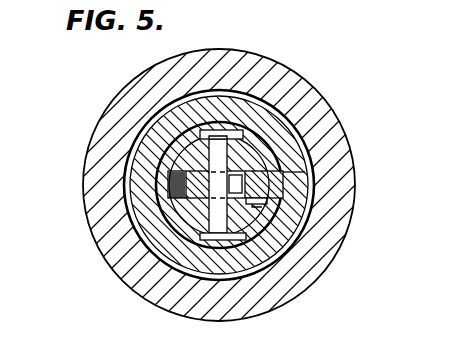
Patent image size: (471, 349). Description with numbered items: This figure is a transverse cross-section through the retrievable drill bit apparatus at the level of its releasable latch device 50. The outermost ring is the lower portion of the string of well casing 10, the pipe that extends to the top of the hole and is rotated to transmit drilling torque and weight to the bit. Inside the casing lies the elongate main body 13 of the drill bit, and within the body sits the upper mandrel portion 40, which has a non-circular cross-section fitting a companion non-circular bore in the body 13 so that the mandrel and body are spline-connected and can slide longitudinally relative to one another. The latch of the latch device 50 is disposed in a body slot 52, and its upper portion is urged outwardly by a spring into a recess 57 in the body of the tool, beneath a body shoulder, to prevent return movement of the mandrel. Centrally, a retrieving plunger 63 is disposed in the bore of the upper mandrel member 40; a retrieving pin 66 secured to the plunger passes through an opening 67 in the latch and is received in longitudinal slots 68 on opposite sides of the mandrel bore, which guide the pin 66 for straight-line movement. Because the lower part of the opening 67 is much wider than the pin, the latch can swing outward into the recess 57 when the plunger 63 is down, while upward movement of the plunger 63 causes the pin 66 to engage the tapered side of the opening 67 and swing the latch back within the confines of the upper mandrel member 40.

The string of well casing 10 is at (328, 96).
The main body 13 is at (290, 137).
The upper mandrel portion 40 is at (140, 137).
The releasable latch device 50 is at (244, 172).
The body slot 52 is at (268, 203).
The recess 57 is at (279, 160).
The retrieving plunger 63 is at (195, 207).
The retrieving pin 66 is at (228, 134).
The latch opening 67 is at (237, 163).
The longitudinal slots 68 is at (213, 139).